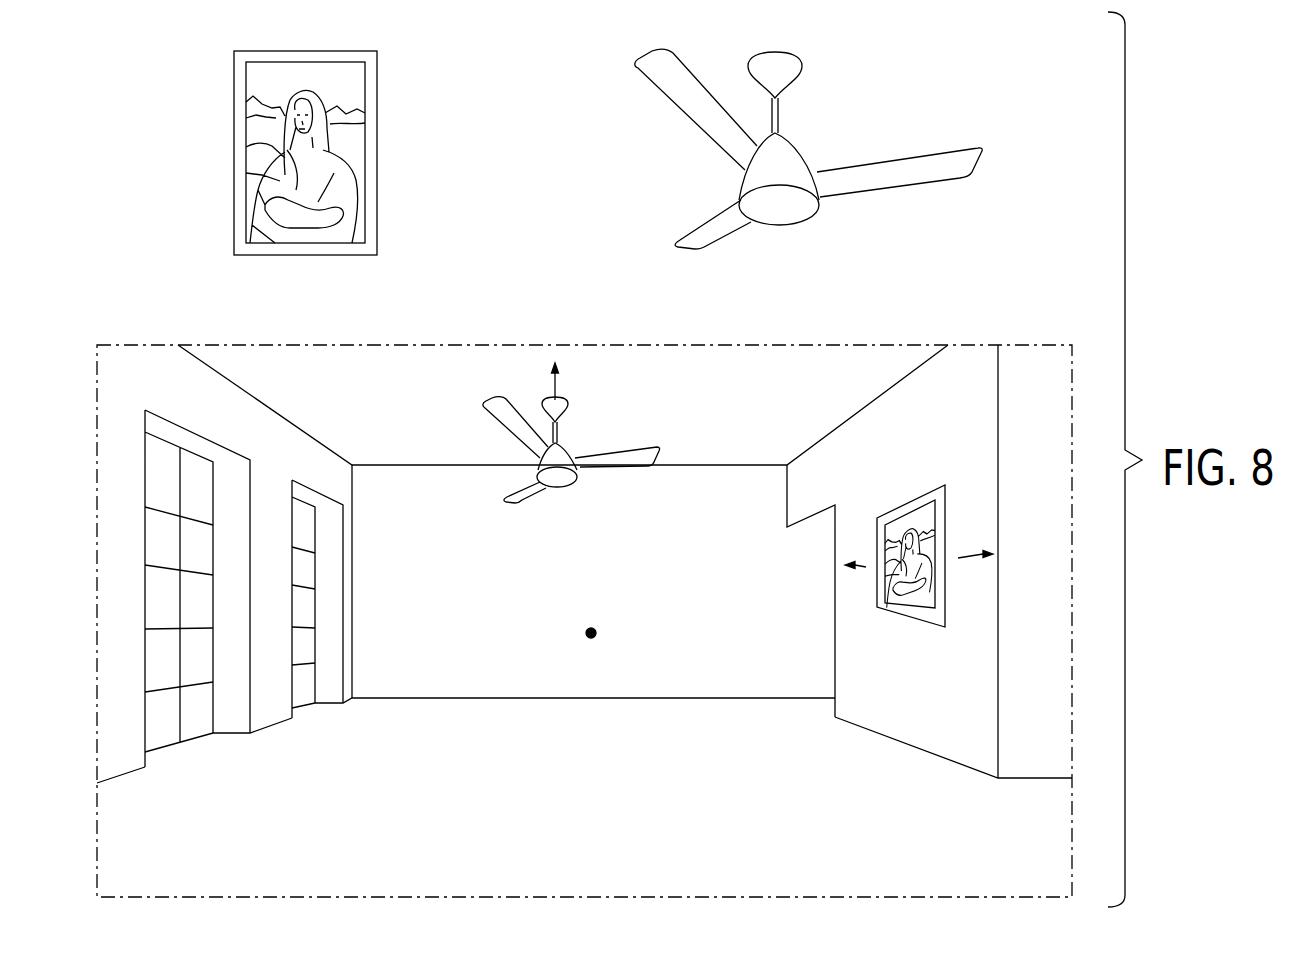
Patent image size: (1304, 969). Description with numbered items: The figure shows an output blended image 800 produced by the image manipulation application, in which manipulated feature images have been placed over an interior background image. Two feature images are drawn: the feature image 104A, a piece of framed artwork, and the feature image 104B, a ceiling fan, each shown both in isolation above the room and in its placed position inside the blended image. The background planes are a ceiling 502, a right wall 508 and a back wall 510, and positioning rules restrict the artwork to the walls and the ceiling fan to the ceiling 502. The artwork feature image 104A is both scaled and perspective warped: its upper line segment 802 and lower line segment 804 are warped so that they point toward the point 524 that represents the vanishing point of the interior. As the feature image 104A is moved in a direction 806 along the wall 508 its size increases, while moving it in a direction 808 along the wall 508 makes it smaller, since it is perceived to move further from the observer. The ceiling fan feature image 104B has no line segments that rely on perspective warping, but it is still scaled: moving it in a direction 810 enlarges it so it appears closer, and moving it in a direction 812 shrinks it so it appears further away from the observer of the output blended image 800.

The output blended image 800 is at (542, 308).
The upper line segment 802 is at (305, 50).
The lower line segment 804 is at (342, 256).
The feature image 104A is at (563, 336).
The feature image 104B is at (788, 248).
The direction 810 is at (549, 391).
The direction 812 is at (560, 428).
The ceiling 502 is at (744, 422).
The right wall 508 is at (302, 463).
The back wall 510 is at (521, 623).
The point 524 is at (592, 626).
The direction 808 is at (866, 567).
The direction 806 is at (958, 558).